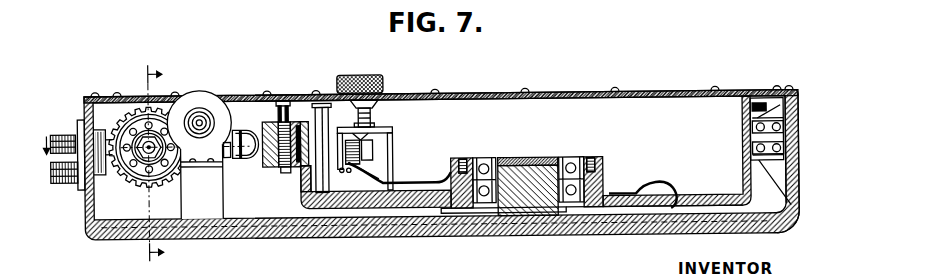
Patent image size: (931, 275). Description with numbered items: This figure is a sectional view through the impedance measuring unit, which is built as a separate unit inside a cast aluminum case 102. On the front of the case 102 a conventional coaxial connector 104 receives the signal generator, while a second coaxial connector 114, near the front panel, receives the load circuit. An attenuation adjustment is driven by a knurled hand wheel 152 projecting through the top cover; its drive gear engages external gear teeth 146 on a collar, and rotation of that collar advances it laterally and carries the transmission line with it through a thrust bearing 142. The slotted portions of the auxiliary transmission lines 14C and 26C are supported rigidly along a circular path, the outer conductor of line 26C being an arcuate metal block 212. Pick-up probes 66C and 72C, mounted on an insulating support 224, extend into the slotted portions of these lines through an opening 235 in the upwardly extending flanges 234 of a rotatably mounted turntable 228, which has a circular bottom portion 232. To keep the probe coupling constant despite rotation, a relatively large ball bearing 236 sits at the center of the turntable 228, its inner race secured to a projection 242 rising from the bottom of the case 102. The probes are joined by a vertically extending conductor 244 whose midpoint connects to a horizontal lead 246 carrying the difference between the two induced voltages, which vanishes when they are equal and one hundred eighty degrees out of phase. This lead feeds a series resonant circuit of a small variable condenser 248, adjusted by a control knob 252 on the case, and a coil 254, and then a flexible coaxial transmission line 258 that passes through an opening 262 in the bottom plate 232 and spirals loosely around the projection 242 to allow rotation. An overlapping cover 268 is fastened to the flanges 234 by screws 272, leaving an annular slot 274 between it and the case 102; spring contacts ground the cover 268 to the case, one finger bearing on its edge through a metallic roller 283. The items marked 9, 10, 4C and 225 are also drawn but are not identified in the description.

The section line 9- 9 is at (149, 165).
The instrument 10 is at (41, 142).
The case 102 is at (85, 213).
The coaxial connector 104 is at (57, 185).
The coaxial connector 114 is at (60, 135).
The external gear teeth 146 is at (117, 122).
The thrust bearing 142 is at (148, 154).
The knurled hand wheel 152 is at (198, 91).
The spring clip 4C is at (230, 169).
The block 212 is at (262, 97).
The metallic roller 283 is at (285, 104).
The pick-up probe 72C is at (312, 114).
The turntable 228 is at (445, 219).
The pick-up probe 66C is at (300, 180).
The opening 235 is at (322, 110).
The plate 225 is at (326, 200).
The vertically extending conductor 244 is at (313, 202).
The control knob 252 is at (385, 86).
The horizontal lead 246 is at (376, 120).
The insulating support 224 is at (336, 131).
The coil 254 is at (346, 175).
The variable condenser 248 is at (386, 161).
The flexible coaxial transmission line 258 is at (453, 161).
The ball bearing 236 is at (570, 162).
The projection 242 is at (530, 233).
The bottom portion 232 is at (657, 222).
The opening 262 is at (687, 199).
The flanges 234 is at (748, 145).
The screws 272 is at (530, 95).
The cover 268 is at (730, 96).
The annular slot 274 is at (767, 102).
The auxiliary transmission line 14C is at (800, 100).
The auxiliary transmission line 26C is at (801, 217).